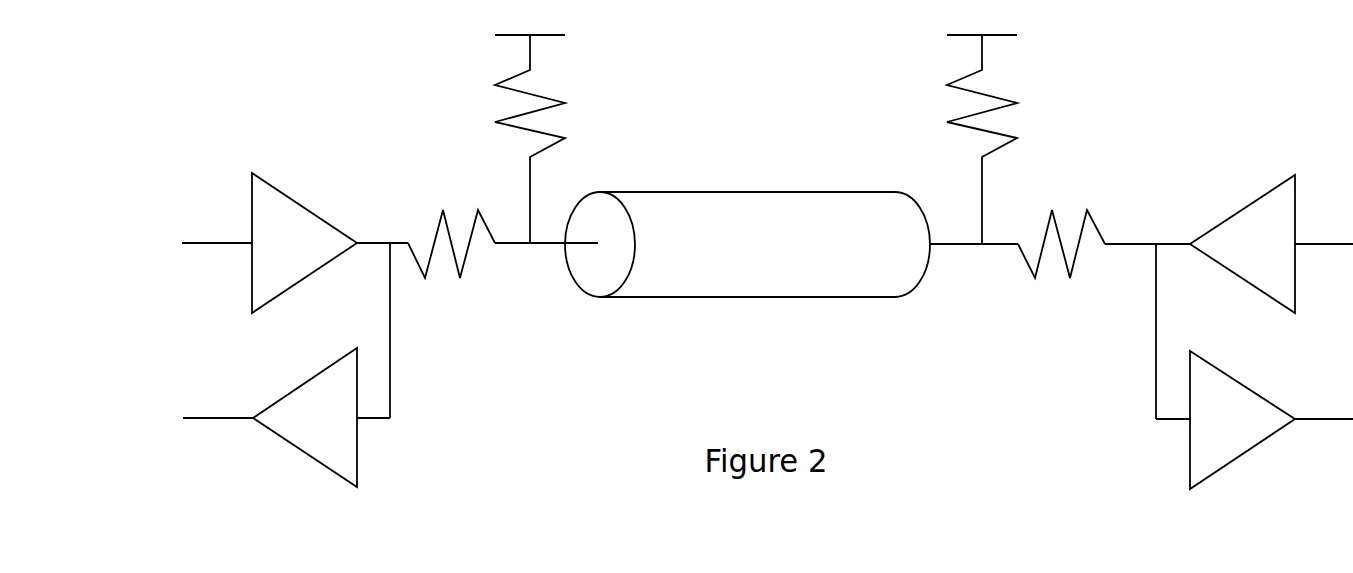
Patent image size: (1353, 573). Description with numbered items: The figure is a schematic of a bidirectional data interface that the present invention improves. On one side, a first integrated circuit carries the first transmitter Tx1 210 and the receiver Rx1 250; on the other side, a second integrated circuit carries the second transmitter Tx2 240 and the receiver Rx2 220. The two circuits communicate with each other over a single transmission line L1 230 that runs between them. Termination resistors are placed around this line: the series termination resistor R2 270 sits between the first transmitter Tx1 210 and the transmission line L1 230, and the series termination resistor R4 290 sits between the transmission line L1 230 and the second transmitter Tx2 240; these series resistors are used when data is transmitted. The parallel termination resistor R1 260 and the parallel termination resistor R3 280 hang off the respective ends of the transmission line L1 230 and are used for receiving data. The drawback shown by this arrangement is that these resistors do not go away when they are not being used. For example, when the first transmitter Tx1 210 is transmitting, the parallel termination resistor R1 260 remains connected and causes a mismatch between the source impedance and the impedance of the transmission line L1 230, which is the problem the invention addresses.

The first transmitter Tx1 210 is at (304, 243).
The receiver Rx1 250 is at (305, 417).
The parallel termination resistor R1 260 is at (498, 139).
The series termination resistor R2 270 is at (451, 274).
The transmission line L1 230 is at (747, 244).
The parallel termination resistor R3 280 is at (1012, 139).
The series termination resistor R4 290 is at (1061, 275).
The second transmitter Tx2 240 is at (1242, 244).
The receiver Rx2 220 is at (1242, 420).